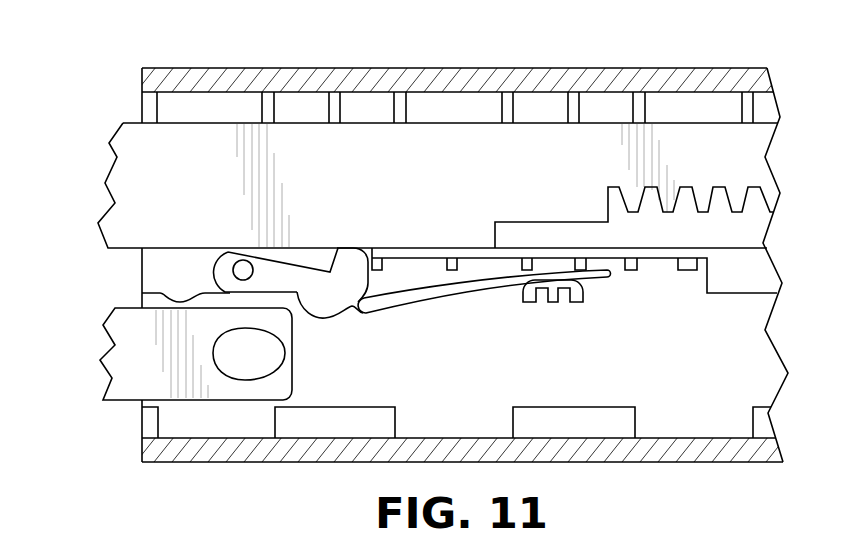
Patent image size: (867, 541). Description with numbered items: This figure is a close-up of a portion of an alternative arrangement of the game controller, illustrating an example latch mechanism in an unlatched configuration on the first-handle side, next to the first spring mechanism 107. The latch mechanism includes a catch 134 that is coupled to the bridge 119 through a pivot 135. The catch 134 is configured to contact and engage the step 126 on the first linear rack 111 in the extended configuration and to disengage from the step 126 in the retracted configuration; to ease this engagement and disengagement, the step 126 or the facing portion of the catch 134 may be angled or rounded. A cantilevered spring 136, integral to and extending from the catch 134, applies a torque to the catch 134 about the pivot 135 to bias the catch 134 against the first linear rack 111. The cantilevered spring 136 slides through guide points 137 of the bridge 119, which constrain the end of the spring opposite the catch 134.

The bridge 119 is at (452, 68).
The first linear rack 111 is at (452, 196).
The step 126 is at (495, 222).
The pivot 135 is at (222, 253).
The catch 134 is at (323, 320).
The cantilevered spring 136 is at (439, 296).
The guide points 137 is at (552, 304).
The first spring mechanism 107 is at (117, 400).